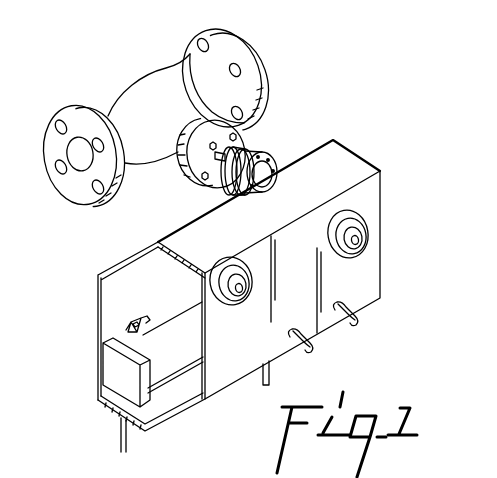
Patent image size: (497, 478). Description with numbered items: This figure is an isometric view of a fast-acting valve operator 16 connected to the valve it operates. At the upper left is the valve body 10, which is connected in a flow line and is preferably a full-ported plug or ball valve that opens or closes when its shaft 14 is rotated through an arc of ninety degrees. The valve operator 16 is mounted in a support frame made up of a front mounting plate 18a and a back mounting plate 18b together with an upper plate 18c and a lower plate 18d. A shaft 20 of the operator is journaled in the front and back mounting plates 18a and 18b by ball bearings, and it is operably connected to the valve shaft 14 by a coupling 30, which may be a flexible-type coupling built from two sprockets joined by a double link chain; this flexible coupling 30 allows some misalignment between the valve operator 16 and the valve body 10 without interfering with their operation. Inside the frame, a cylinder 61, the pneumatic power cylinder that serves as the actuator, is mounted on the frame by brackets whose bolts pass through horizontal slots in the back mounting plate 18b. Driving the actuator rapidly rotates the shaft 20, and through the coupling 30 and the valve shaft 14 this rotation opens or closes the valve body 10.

The valve body 10 is at (144, 66).
The shaft 14 is at (237, 128).
The coupling 30 is at (283, 141).
The valve operator 16 is at (236, 293).
The front mounting plate 18a is at (374, 283).
The back mounting plate 18b is at (100, 305).
The upper plate 18c is at (360, 164).
The lower plate 18d is at (174, 398).
The shaft 20 is at (366, 231).
The cylinder 61 is at (177, 292).